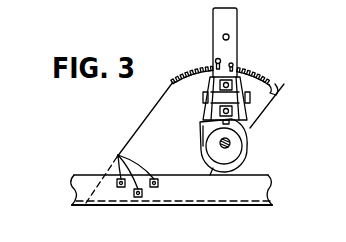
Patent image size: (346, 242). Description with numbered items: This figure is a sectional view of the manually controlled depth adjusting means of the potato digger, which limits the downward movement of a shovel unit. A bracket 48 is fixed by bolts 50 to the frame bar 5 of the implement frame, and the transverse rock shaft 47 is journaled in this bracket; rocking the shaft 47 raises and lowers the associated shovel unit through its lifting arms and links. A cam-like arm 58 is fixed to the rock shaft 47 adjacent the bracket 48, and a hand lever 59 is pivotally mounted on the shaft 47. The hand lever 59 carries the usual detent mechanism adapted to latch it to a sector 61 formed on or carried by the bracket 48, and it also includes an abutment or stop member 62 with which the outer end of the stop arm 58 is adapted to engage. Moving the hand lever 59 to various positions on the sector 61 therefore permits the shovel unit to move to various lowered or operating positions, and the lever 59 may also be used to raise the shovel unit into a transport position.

The frame bar 5 is at (262, 194).
The transverse rock shaft 47 is at (231, 146).
The bracket 48 is at (153, 127).
The bolts 50 is at (118, 155).
The cam-like arm 58 is at (213, 148).
The hand lever 59 is at (226, 23).
The sector 61 is at (274, 82).
The abutment or stop member 62 is at (245, 111).